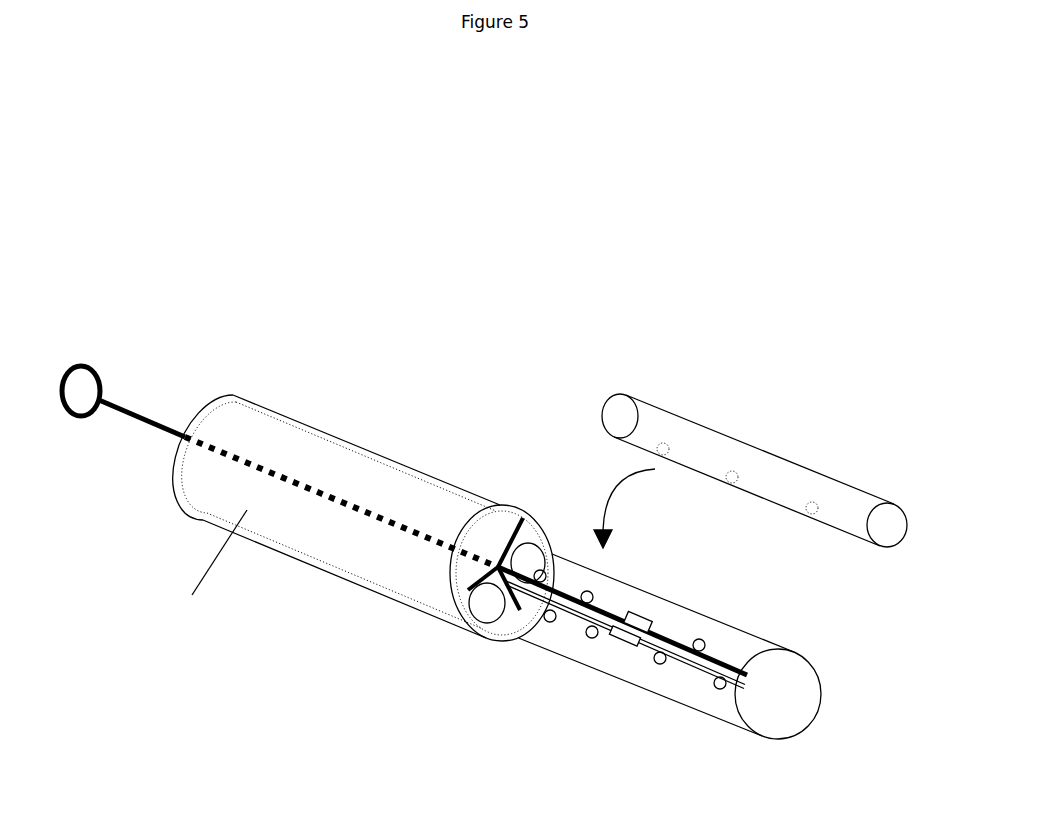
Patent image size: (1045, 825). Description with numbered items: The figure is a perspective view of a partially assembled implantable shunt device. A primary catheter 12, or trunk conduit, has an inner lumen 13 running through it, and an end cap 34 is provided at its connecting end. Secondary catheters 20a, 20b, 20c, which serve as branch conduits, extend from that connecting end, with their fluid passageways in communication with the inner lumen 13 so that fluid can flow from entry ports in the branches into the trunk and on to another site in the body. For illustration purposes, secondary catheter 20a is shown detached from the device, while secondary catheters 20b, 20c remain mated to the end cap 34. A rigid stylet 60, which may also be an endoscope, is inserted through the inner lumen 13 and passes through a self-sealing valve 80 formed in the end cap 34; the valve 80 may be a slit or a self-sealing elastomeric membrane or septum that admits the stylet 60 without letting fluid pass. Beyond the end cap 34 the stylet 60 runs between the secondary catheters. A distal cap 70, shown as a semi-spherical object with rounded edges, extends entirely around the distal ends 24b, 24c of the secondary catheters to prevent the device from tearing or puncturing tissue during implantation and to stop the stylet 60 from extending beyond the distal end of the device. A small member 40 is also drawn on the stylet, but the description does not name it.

The primary catheter 12 is at (320, 425).
The inner lumen 13 is at (202, 564).
The rigid stylet 60 is at (130, 410).
The self-sealing valve 80 is at (498, 565).
The end cap 34 is at (497, 627).
The secondary catheter 20a is at (787, 460).
The secondary catheter 20b is at (600, 677).
The secondary catheter 20c is at (675, 602).
The distal end of secondary catheter 24b is at (698, 702).
The distal end of secondary catheter 24c is at (762, 652).
The stop member on rod 40 is at (618, 635).
The distal cap 70 is at (783, 715).